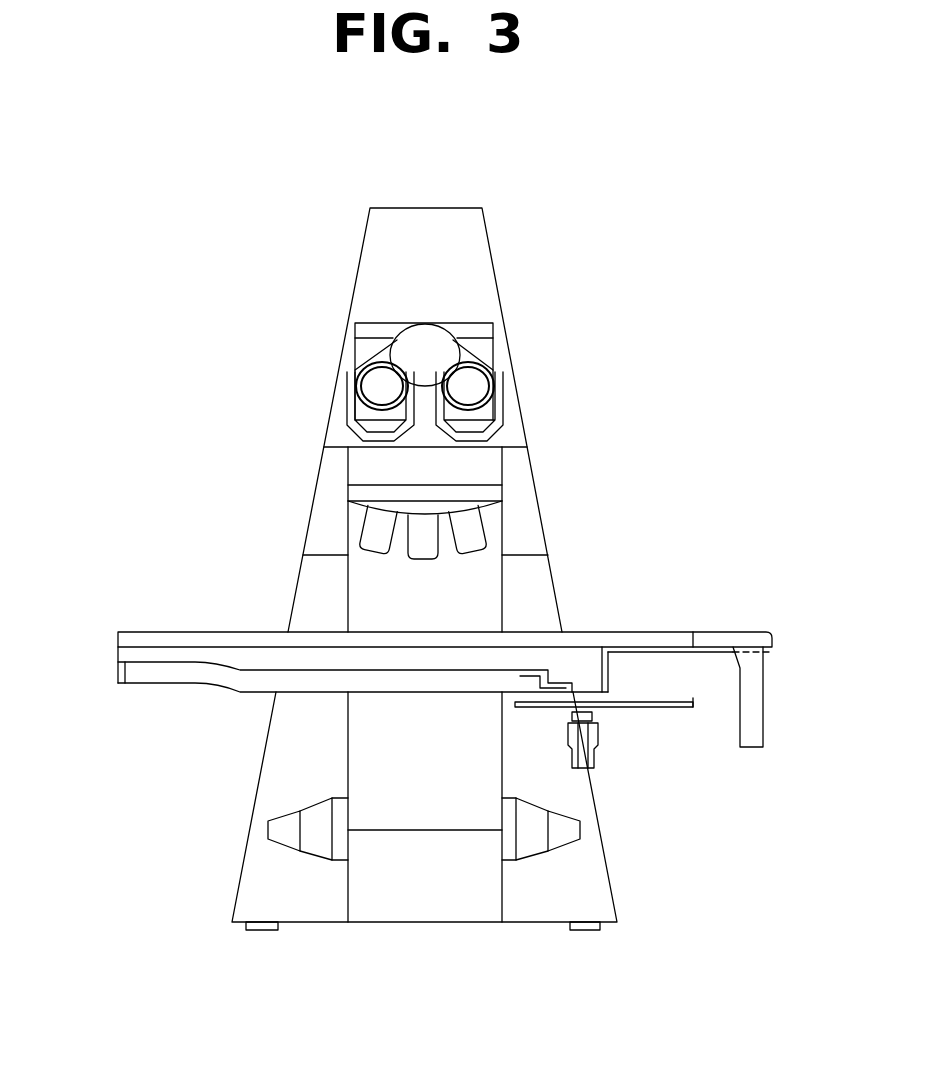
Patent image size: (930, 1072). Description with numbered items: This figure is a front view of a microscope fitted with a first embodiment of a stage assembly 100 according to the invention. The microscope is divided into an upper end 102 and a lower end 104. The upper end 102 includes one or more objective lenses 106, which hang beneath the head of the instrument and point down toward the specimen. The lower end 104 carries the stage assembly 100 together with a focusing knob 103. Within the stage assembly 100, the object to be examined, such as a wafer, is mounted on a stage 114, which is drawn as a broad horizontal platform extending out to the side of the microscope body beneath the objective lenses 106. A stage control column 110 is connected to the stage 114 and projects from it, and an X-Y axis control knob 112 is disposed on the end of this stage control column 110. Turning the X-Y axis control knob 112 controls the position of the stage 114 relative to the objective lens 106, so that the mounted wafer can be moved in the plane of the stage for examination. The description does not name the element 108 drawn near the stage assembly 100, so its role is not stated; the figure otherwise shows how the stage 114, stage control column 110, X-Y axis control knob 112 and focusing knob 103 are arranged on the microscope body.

The stage assembly 100 is at (498, 646).
The upper end 102 is at (580, 207).
The focusing knob 103 is at (567, 843).
The lower end 104 is at (110, 632).
The objective lens 106 is at (377, 525).
The specimen holder plate 108 is at (663, 710).
The stage control column 110 is at (597, 722).
The X-Y axis control knob 112 is at (592, 768).
The stage 114 is at (656, 641).